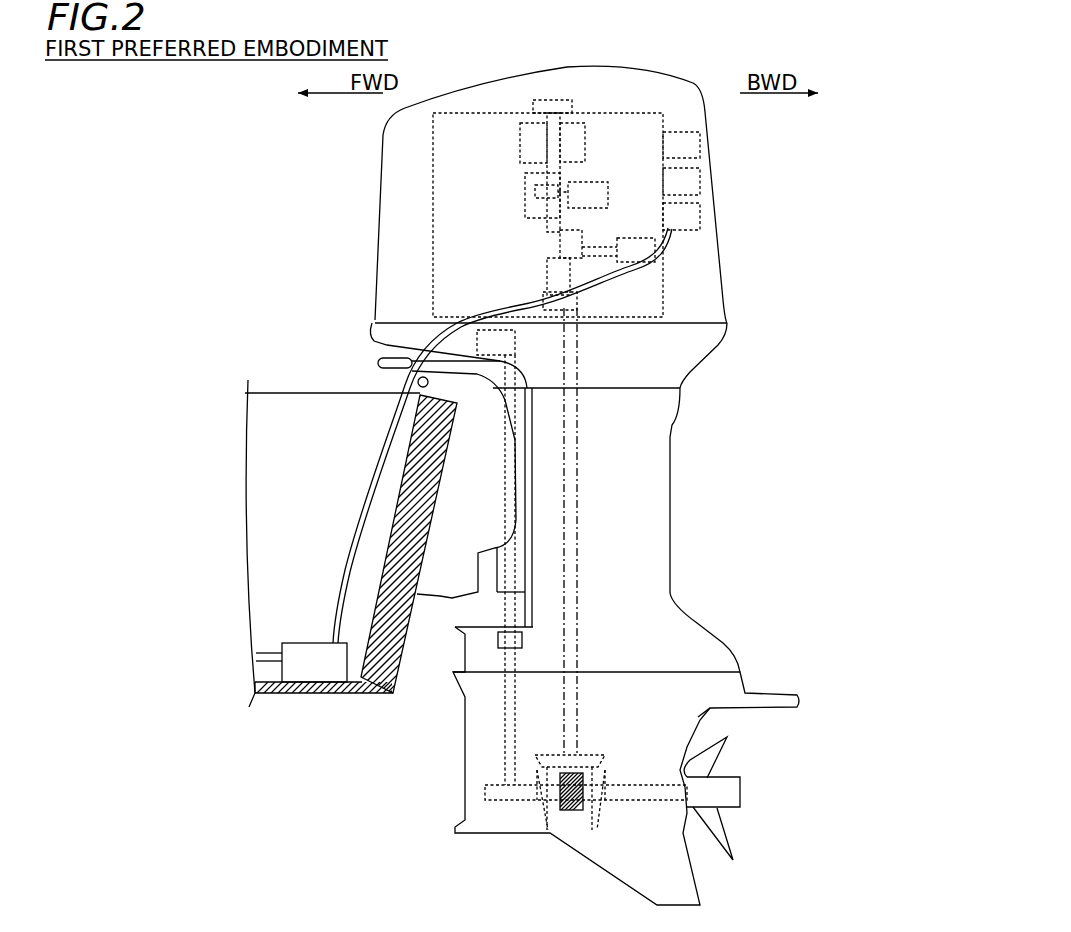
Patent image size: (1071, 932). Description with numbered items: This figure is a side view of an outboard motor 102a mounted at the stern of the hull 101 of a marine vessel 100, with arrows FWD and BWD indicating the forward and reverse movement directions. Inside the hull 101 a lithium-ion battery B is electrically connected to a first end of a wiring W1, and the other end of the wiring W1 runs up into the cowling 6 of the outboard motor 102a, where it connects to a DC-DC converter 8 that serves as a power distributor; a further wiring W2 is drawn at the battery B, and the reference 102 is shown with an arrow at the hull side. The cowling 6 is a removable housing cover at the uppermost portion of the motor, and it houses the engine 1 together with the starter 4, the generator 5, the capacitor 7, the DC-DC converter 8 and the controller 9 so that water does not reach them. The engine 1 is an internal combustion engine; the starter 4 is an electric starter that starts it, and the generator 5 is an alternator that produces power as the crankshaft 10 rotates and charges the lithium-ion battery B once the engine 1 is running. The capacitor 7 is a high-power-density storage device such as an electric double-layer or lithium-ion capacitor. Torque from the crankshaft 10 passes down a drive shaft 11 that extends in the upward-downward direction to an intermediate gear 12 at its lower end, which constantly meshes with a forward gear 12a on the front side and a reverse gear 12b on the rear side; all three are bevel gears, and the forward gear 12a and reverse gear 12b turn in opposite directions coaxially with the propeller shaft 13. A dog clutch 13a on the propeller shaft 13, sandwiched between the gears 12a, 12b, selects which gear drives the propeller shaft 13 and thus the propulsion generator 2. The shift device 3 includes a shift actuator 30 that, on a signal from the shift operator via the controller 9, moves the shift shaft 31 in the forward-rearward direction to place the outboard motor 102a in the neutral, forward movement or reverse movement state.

The marine vessel 100 is at (283, 127).
The engine 1 is at (643, 122).
The propulsion generator 2 is at (726, 850).
The shift device 3 is at (456, 335).
The starter 4 is at (521, 143).
The generator 5 is at (586, 141).
The cowling 6 is at (718, 288).
The capacitor 7 is at (703, 185).
The DC-DC converter 8 is at (703, 217).
The controller 9 is at (700, 148).
The crankshaft 10 is at (527, 212).
The drive shaft 11 is at (578, 491).
The intermediate gear 12 is at (587, 757).
The forward gear 12a is at (537, 760).
The reverse gear 12b is at (608, 773).
The propeller shaft 13 is at (522, 797).
The clutch 13a is at (570, 812).
The shift actuator 30 is at (515, 333).
The shift shaft 31 is at (507, 362).
The hull 101 is at (368, 689).
The hull 102 is at (230, 318).
The outboard motor 102a is at (363, 343).
The lithium-ion battery B is at (305, 643).
The wiring W1 is at (372, 425).
The wire W2 is at (270, 653).